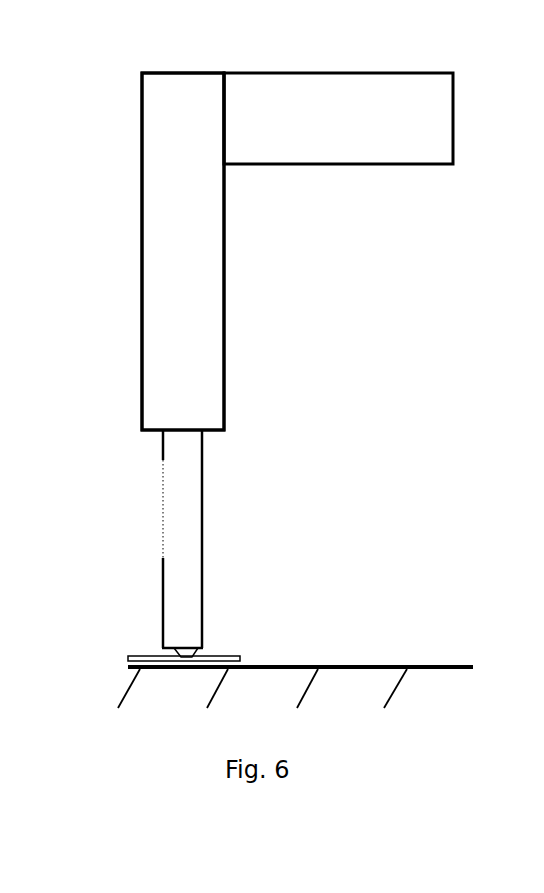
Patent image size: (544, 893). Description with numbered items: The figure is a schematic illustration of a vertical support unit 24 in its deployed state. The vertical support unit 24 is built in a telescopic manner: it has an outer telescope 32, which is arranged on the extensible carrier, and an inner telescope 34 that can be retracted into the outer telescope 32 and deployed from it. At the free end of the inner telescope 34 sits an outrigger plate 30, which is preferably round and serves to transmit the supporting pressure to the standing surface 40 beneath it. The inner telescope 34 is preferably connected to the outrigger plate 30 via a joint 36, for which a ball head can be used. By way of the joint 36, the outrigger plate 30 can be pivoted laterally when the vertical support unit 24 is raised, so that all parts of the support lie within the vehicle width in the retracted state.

The vertical support unit 24 is at (112, 164).
The outer telescope 32 is at (172, 307).
The inner telescope 34 is at (183, 490).
The joint 36 is at (178, 655).
The outrigger plate 30 is at (241, 662).
The standing surface 40 is at (365, 668).